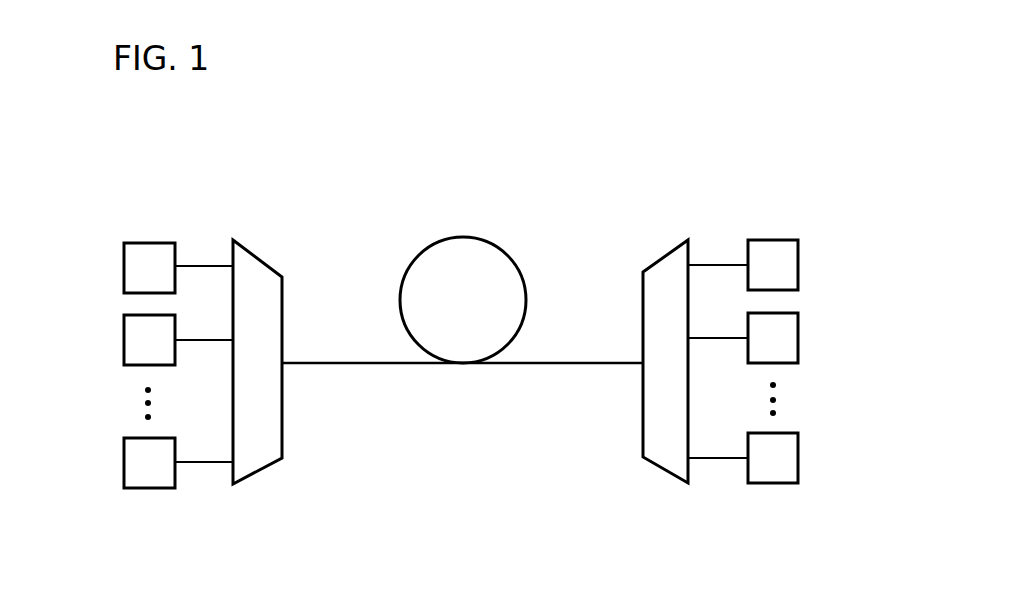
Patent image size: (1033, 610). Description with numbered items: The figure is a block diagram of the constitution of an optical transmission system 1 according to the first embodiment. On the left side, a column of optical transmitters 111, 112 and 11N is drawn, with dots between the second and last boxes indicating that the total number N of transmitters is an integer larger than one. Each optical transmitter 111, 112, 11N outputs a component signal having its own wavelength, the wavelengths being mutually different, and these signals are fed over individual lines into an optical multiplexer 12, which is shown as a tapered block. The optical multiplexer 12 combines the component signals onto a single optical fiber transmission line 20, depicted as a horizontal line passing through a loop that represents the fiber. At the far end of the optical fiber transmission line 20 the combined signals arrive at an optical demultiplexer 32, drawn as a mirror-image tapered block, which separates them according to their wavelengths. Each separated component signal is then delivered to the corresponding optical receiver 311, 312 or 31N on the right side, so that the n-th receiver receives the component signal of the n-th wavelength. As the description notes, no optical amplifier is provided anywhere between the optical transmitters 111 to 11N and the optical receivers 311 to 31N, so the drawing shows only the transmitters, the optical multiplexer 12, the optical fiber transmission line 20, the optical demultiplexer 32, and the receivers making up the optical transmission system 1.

The optical transmission system 1 is at (586, 112).
The optical transmitter 111 is at (124, 277).
The optical transmitter 112 is at (124, 350).
The optical transmitter 11N is at (124, 473).
The optical multiplexer 12 is at (258, 254).
The optical fiber transmission line 20 is at (484, 238).
The optical demultiplexer 32 is at (663, 257).
The optical receiver 311 is at (798, 264).
The optical receiver 312 is at (798, 337).
The optical receiver 31N is at (798, 457).